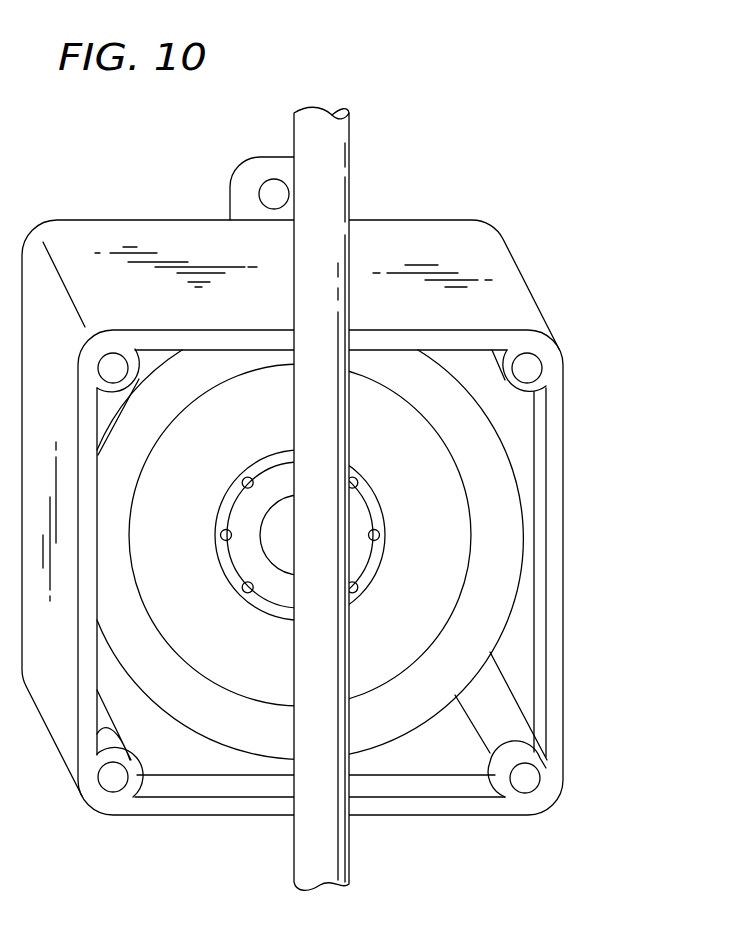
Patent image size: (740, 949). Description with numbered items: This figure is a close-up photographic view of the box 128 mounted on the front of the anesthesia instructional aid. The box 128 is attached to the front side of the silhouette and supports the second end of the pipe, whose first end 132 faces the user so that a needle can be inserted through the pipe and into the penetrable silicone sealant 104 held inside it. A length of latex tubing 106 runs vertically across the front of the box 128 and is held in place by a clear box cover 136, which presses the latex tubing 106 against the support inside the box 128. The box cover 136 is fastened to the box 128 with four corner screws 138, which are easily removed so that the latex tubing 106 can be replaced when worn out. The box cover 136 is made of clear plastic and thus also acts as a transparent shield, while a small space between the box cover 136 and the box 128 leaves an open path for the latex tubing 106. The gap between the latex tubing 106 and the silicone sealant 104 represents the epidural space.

The silicone sealant 104 is at (276, 501).
The latex tubing 106 is at (350, 190).
The box 128 is at (523, 279).
The first end 132 is at (229, 566).
The box cover 136 is at (564, 431).
The corner screws 138 is at (545, 369).